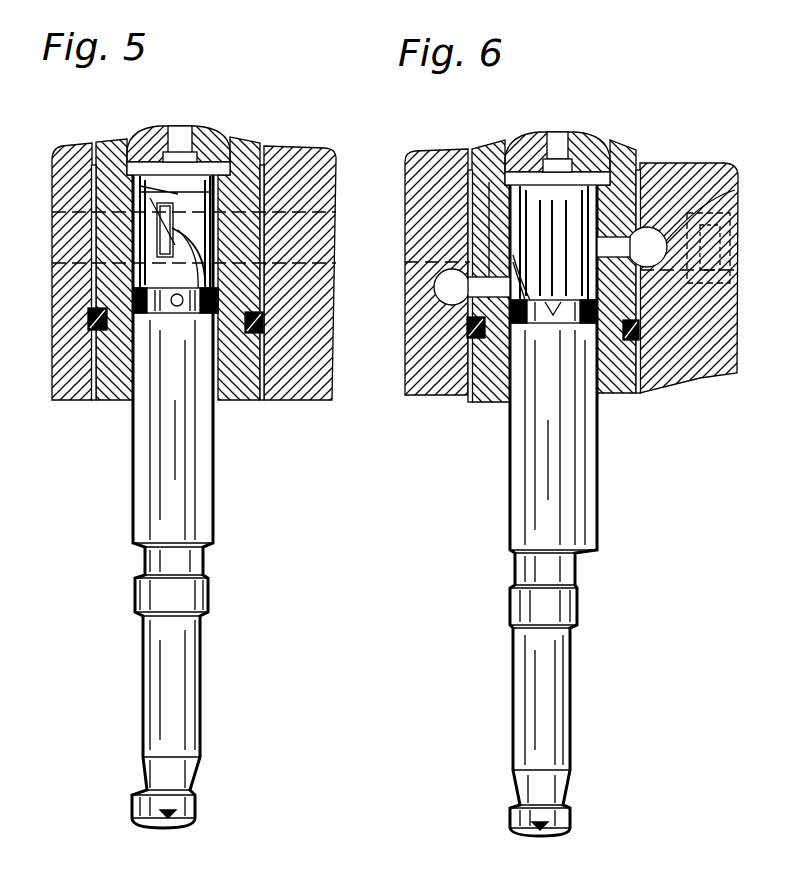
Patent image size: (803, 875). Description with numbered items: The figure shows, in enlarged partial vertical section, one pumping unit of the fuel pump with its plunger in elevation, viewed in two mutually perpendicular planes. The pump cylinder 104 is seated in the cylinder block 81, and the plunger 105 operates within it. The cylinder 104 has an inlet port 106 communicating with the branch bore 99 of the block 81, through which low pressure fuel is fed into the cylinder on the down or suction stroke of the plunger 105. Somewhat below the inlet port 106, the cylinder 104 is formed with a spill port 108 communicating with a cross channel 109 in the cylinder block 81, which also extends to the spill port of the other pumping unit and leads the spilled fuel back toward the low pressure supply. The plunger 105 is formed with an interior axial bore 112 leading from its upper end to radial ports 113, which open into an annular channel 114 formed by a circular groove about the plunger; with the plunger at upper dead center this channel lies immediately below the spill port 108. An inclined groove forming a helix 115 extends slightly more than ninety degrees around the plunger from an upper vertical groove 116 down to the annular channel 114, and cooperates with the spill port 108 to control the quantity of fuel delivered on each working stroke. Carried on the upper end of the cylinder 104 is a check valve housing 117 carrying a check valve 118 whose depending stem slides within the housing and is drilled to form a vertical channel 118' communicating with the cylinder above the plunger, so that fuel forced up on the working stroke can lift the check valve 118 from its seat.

In FIG. 5, the cylinder block 81 is at (332, 162).
In FIG. 6, the cylinder block 81 is at (682, 170).
In FIG. 5, the branch bore 99 is at (60, 212).
In FIG. 6, the branch bore 99 is at (735, 190).
In FIG. 5, the pump cylinder 104 is at (262, 146).
In FIG. 6, the pump cylinder 104 is at (628, 153).
In FIG. 5, the plunger 105 is at (205, 492).
In FIG. 6, the plunger 105 is at (597, 482).
In FIG. 6, the inlet port 106 is at (628, 252).
In FIG. 6, the spill port 108 is at (487, 289).
In FIG. 6, the cross channel 109 is at (455, 270).
In FIG. 5, the interior axial bore 112 is at (178, 192).
In FIG. 6, the interior axial bore 112 is at (490, 182).
In FIG. 5, the radial ports 113 is at (177, 306).
In FIG. 5, the annular channel 114 is at (135, 297).
In FIG. 6, the annular channel 114 is at (593, 325).
In FIG. 5, the helix 115 is at (206, 250).
In FIG. 6, the helix 115 is at (515, 305).
In FIG. 5, the upper vertical groove 116 is at (160, 233).
In FIG. 5, the check valve housing 117 is at (215, 132).
In FIG. 6, the check valve housing 117 is at (520, 140).
In FIG. 5, the check valve 118 is at (171, 120).
In FIG. 6, the check valve 118 is at (589, 128).
In FIG. 5, the vertical channel 118' is at (207, 125).